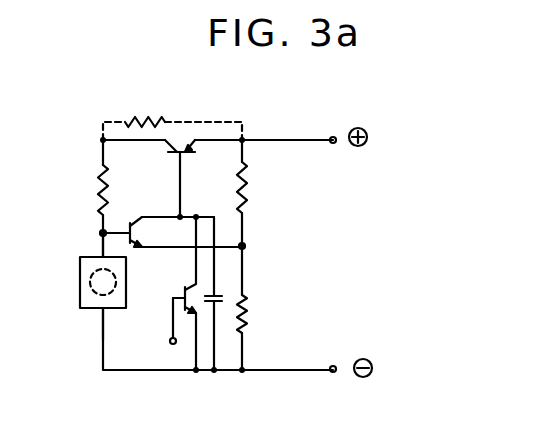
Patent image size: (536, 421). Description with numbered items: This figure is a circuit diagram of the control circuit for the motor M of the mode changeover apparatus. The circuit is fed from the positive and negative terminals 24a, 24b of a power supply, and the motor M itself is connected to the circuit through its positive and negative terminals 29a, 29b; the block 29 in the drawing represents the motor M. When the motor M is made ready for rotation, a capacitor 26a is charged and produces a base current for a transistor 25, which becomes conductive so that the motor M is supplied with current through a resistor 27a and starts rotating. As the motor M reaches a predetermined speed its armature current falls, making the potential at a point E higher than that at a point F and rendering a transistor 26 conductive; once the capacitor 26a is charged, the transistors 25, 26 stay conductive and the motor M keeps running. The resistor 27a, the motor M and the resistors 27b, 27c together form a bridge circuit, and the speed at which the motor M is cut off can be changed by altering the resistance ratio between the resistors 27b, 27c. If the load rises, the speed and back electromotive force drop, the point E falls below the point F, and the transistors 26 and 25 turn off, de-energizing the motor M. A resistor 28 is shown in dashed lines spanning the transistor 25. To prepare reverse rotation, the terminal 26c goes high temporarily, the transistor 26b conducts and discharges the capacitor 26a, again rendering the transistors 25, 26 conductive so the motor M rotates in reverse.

The positive terminal 24a is at (335, 136).
The negative terminal 24b is at (335, 366).
The transistor 25 is at (196, 153).
The transistor 26 is at (139, 233).
The capacitor 26a is at (222, 294).
The transistor 26b is at (184, 290).
The terminal 26c is at (172, 344).
The resistor 27a is at (108, 182).
The resistor 27b is at (247, 181).
The resistor 27c is at (247, 319).
The feedback resistor 28 is at (150, 122).
The motor 29 is at (79, 294).
The positive terminal 29a is at (101, 255).
The negative terminal 29b is at (101, 308).
The motor M is at (90, 282).
The point E is at (100, 231).
The point F is at (243, 245).